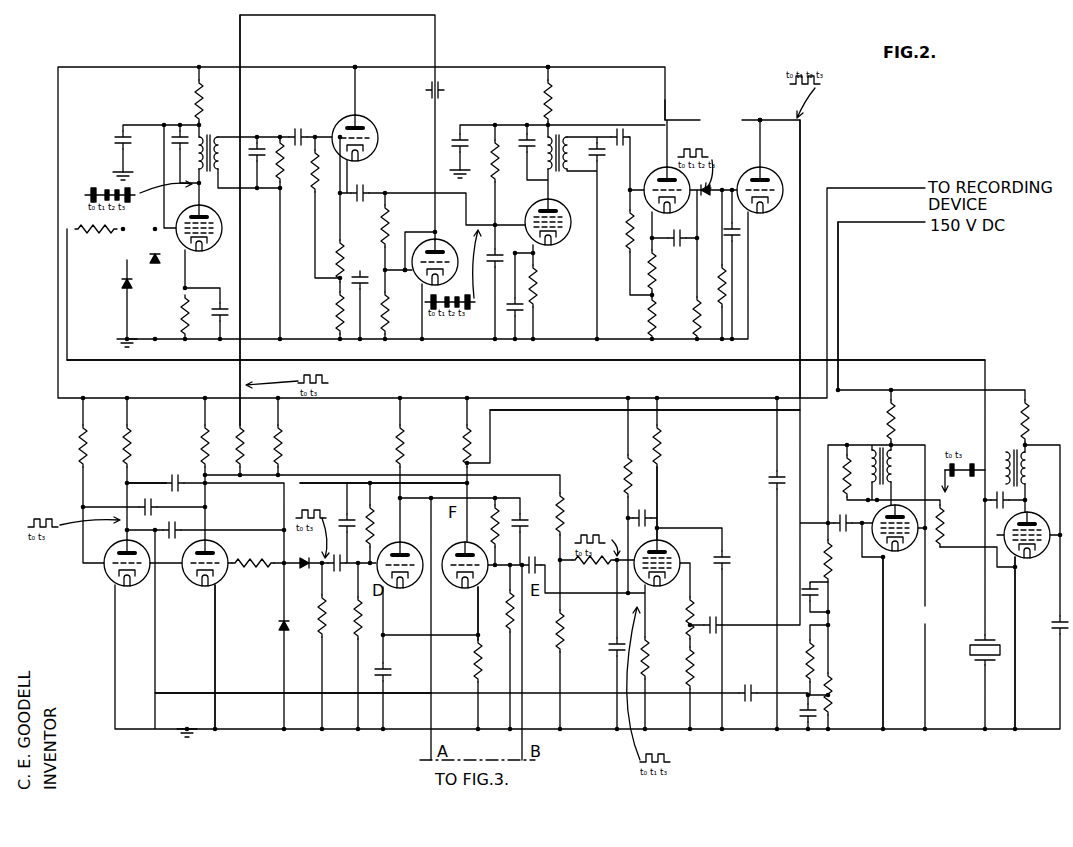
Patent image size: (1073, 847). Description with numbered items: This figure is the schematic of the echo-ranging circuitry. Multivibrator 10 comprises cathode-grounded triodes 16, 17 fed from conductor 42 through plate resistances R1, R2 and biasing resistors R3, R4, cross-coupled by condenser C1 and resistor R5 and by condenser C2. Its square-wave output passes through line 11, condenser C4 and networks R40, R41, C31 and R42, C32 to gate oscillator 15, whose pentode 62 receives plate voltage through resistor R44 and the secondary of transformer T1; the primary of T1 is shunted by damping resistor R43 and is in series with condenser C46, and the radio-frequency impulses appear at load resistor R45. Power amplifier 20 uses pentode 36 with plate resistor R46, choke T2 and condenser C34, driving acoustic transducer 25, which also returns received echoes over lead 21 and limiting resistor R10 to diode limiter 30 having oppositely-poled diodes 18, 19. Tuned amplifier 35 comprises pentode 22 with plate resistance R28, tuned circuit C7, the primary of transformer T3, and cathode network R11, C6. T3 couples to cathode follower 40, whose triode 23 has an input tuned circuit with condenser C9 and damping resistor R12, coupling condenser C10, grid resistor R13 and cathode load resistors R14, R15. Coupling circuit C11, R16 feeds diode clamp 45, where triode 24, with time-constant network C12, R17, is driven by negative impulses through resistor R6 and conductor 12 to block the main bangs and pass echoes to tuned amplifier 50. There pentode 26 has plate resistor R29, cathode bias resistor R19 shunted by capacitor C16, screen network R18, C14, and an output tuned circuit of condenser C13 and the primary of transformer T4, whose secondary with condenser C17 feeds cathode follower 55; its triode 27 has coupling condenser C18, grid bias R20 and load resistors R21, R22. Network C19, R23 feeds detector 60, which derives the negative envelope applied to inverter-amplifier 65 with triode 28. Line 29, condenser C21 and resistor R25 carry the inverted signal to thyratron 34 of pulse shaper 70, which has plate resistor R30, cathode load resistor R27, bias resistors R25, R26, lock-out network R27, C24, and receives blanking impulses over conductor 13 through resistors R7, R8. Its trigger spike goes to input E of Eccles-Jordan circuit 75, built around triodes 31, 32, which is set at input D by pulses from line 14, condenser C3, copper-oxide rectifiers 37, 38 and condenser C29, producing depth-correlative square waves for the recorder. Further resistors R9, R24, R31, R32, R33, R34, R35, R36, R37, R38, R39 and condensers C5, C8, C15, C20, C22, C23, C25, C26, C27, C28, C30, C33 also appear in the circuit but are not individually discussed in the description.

The multivibrator 10 is at (194, 617).
The line 11 is at (160, 665).
The conductor 12 is at (244, 418).
The conductor 13 is at (300, 483).
The line 14 is at (134, 483).
The oscillator 15 is at (912, 600).
The triode 16 is at (104, 570).
The triode 17 is at (224, 553).
The diode 18 is at (122, 283).
The diode 19 is at (155, 262).
The power amplifier 20 is at (1049, 610).
The lead 21 is at (925, 360).
The pentode tube 22 is at (222, 232).
The triode 23 is at (365, 120).
The triode 24 is at (445, 240).
The acoustic transducer 25 is at (972, 658).
The pentode 26 is at (558, 248).
The triode 27 is at (664, 170).
The triode 28 is at (772, 170).
The line 29 is at (802, 146).
The diode limiter 30 is at (156, 321).
The triode 31 is at (408, 542).
The triode 32 is at (462, 546).
The thyratron tube 34 is at (492, 426).
The tuned amplifier 35 is at (229, 285).
The pentode 36 is at (1036, 520).
The copper-oxide rectifier 37 is at (278, 628).
The copper-oxide rectifier 38 is at (308, 568).
The cathode follower 40 is at (367, 55).
The conductor 42 is at (840, 286).
The diode clamping circuit 45 is at (429, 221).
The tuned amplifier circuit 50 is at (564, 55).
The cathode follower 55 is at (696, 121).
The detector 60 is at (705, 196).
The pentode tube 62 is at (906, 550).
The inverter-amplifier 65 is at (774, 115).
The pulse shaper circuit 70 is at (694, 490).
The Eccles-Jordan flip-flop circuit 75 is at (469, 625).
The plate resistance R1 is at (125, 440).
The plate resistance R2 is at (203, 440).
The biasing resistor R3 is at (80, 440).
The biasing resistor R4 is at (282, 445).
The resistor R5 is at (240, 570).
The resistor R6 is at (243, 455).
The resistor R7 is at (563, 506).
The resistor R8 is at (580, 566).
The resistor R9 is at (563, 620).
The limiting resistor R10 is at (112, 238).
The resistor R11 is at (187, 335).
The damping resistor R12 is at (280, 135).
The grid biasing resistor R13 is at (312, 188).
The cathode load resistor R14 is at (337, 245).
The cathode load resistor R15 is at (337, 312).
The resistor R16 is at (382, 225).
The resistor R17 is at (388, 330).
The resistor R18 is at (495, 135).
The resistor R19 is at (538, 280).
The grid bias resistor R20 is at (630, 235).
The load resistor R21 is at (656, 272).
The load resistor R22 is at (650, 318).
The resistor R23 is at (697, 310).
The resistor R24 is at (726, 290).
The resistor R25 is at (688, 605).
The resistor R26 is at (696, 660).
The load resistor R27 is at (645, 652).
The plate resistance R28 is at (197, 92).
The resistor R29 is at (555, 96).
The resistor R30 is at (662, 436).
The resistor R31 is at (626, 468).
The resistor R32 is at (464, 435).
The resistor R33 is at (397, 435).
The resistor R34 is at (493, 518).
The resistor R35 is at (368, 505).
The resistor R36 is at (355, 625).
The resistor R37 is at (318, 625).
The resistor R38 is at (474, 660).
The resistor R39 is at (514, 625).
The resistor R40 is at (816, 655).
The resistor R41 is at (832, 690).
The resistor R42 is at (832, 560).
The damping resistor R43 is at (846, 455).
The resistor R44 is at (896, 412).
The load resistor R45 is at (940, 540).
The plate resistor R46 is at (1044, 380).
The condenser C1 is at (176, 526).
The condenser C2 is at (143, 504).
The condenser C3 is at (176, 476).
The condenser C4 is at (750, 688).
The capacitor C5 is at (427, 90).
The condenser C6 is at (226, 312).
The tuned circuit condenser C7 is at (179, 130).
The capacitor C8 is at (118, 139).
The condenser C9 is at (255, 143).
The coupling condenser C10 is at (298, 130).
The condenser C11 is at (361, 184).
The condenser C12 is at (366, 272).
The condenser C13 is at (524, 135).
The capacitor C14 is at (452, 138).
The capacitor C15 is at (498, 245).
The capacitor C16 is at (524, 312).
The condenser C17 is at (597, 143).
The coupling condenser C18 is at (620, 128).
The condenser C19 is at (686, 252).
The capacitor C20 is at (740, 232).
The coupling condenser C21 is at (716, 620).
The capacitor C22 is at (724, 556).
The capacitor C23 is at (770, 480).
The condenser C24 is at (634, 518).
The capacitor C25 is at (608, 648).
The capacitor C26 is at (533, 558).
The capacitor C27 is at (525, 520).
The capacitor C28 is at (346, 514).
The coupling condenser C29 is at (340, 568).
The capacitor C30 is at (390, 672).
The capacitor C31 is at (818, 712).
The capacitor C32 is at (818, 594).
The capacitor C33 is at (1000, 510).
The condenser C34 is at (1056, 628).
The condenser C46 is at (836, 520).
The transformer T1 is at (884, 448).
The choke T2 is at (1009, 459).
The transformer T3 is at (222, 138).
The transformer T4 is at (568, 175).